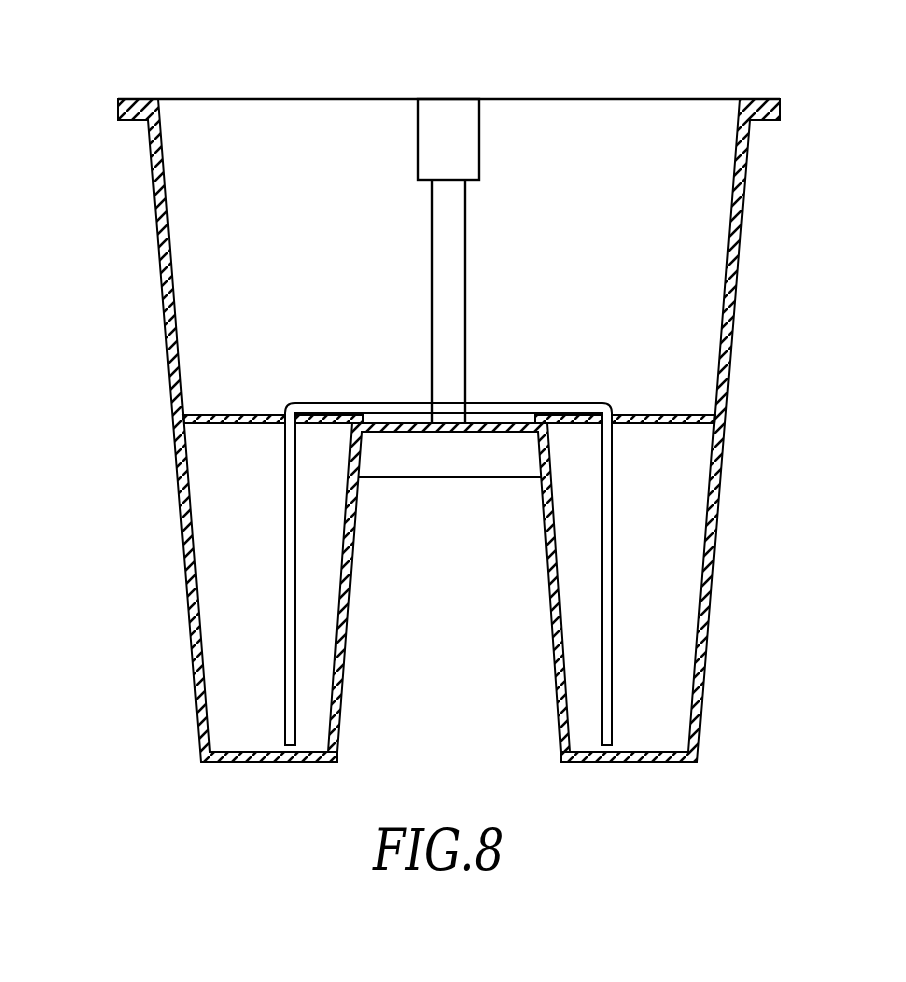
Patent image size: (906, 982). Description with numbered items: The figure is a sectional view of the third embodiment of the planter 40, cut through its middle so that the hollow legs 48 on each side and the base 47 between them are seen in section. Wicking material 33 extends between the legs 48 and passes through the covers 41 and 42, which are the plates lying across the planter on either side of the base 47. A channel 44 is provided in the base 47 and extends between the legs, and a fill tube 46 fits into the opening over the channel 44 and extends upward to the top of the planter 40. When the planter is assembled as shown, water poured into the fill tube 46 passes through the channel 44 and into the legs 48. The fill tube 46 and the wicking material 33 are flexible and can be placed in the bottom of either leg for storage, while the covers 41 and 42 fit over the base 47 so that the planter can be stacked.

The planter 40 is at (126, 63).
The wicking material 33 is at (519, 403).
The cover 41 is at (250, 413).
The cover 42 is at (650, 414).
The channel 44 is at (474, 468).
The fill tube 46 is at (443, 241).
The base 47 is at (445, 422).
The legs 48 is at (189, 611).